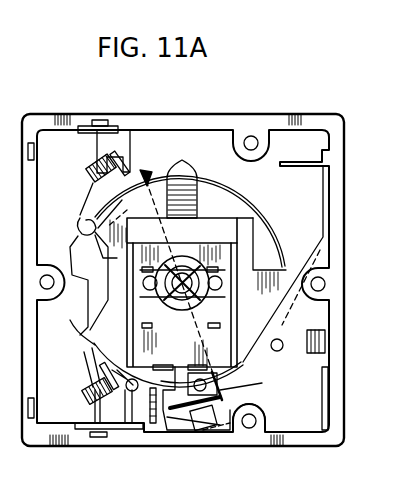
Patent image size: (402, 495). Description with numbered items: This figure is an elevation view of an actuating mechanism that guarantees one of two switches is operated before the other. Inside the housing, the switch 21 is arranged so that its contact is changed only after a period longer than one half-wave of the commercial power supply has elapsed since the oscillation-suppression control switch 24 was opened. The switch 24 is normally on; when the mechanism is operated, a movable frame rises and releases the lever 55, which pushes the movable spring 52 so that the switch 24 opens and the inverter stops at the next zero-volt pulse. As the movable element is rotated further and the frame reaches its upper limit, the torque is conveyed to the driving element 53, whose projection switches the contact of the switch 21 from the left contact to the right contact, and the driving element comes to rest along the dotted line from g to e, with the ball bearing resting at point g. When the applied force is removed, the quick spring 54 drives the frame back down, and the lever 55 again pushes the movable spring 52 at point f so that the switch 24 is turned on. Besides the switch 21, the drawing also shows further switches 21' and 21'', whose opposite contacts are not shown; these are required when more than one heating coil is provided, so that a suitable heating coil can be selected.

The switch 21' is at (121, 174).
The point g is at (147, 170).
The driving element 53 is at (82, 226).
The quick spring 54 is at (218, 192).
The switch 21'' is at (316, 298).
The switch 21 is at (93, 392).
The point e is at (168, 365).
The point f is at (237, 377).
The movable spring 52 is at (222, 392).
The lever 55 is at (172, 405).
The oscillation-suppression control switch 24 is at (250, 408).